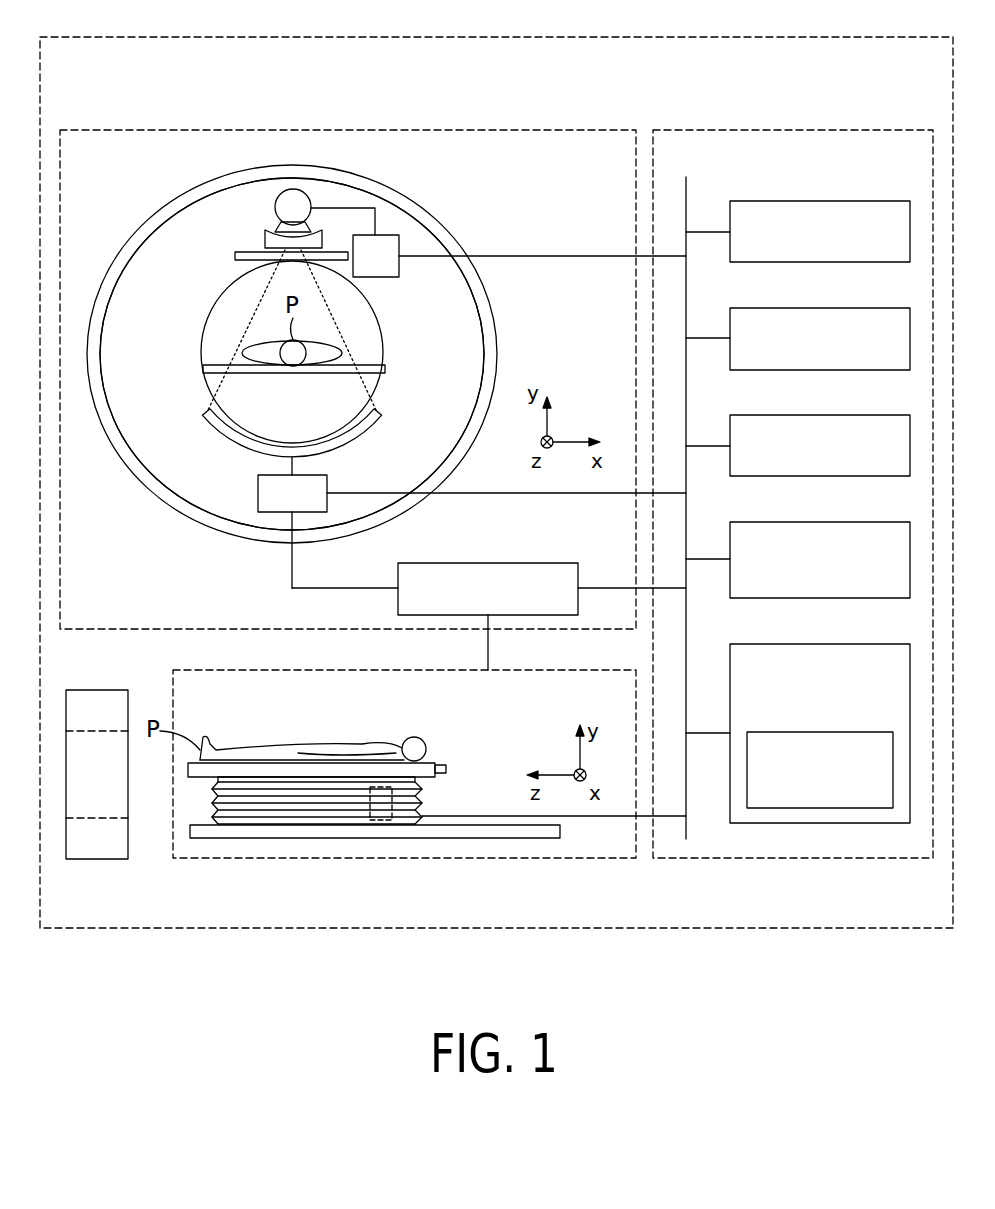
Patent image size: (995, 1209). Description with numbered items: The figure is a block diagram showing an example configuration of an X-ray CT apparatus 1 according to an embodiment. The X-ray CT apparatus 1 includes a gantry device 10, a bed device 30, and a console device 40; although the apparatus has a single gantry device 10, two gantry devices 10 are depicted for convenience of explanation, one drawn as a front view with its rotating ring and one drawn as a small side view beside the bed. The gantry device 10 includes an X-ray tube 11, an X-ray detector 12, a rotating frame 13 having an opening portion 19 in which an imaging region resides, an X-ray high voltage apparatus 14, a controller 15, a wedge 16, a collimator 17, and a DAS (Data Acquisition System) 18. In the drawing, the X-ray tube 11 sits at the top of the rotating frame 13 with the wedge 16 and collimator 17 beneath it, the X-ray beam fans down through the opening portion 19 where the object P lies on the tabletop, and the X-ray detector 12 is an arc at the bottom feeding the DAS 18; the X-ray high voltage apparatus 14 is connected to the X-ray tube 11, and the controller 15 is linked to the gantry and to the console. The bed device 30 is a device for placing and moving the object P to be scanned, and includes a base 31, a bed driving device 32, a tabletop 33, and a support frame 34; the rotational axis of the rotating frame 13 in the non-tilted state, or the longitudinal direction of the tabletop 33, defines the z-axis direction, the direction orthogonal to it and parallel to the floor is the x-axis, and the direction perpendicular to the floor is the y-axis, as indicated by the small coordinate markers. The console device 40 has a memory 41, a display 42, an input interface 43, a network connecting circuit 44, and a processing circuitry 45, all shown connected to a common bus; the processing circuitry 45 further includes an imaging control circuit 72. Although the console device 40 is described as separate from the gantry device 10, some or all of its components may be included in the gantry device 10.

The X-ray CT apparatus 1 is at (848, 37).
The gantry device 10 is at (552, 130).
The X-ray tube 11 is at (275, 208).
The X-ray detector 12 is at (210, 422).
The rotating frame 13 is at (412, 198).
The X-ray high voltage apparatus 14 is at (399, 279).
The controller 15 is at (528, 563).
The wedge 16 is at (265, 237).
The collimator 17 is at (235, 257).
The DAS (Data Acquisition System) 18 is at (258, 492).
The opening portion 19 is at (203, 327).
The bed device 30 is at (553, 670).
The base 31 is at (212, 790).
The bed driving device 32 is at (392, 803).
The tabletop 33 is at (210, 373).
The support frame 34 is at (188, 768).
The console device 40 is at (848, 130).
The memory 41 is at (848, 201).
The display 42 is at (848, 308).
The input interface 43 is at (848, 415).
The network connecting circuit 44 is at (848, 522).
The processing circuitry 45 is at (848, 644).
The imaging control circuit 72 is at (835, 732).